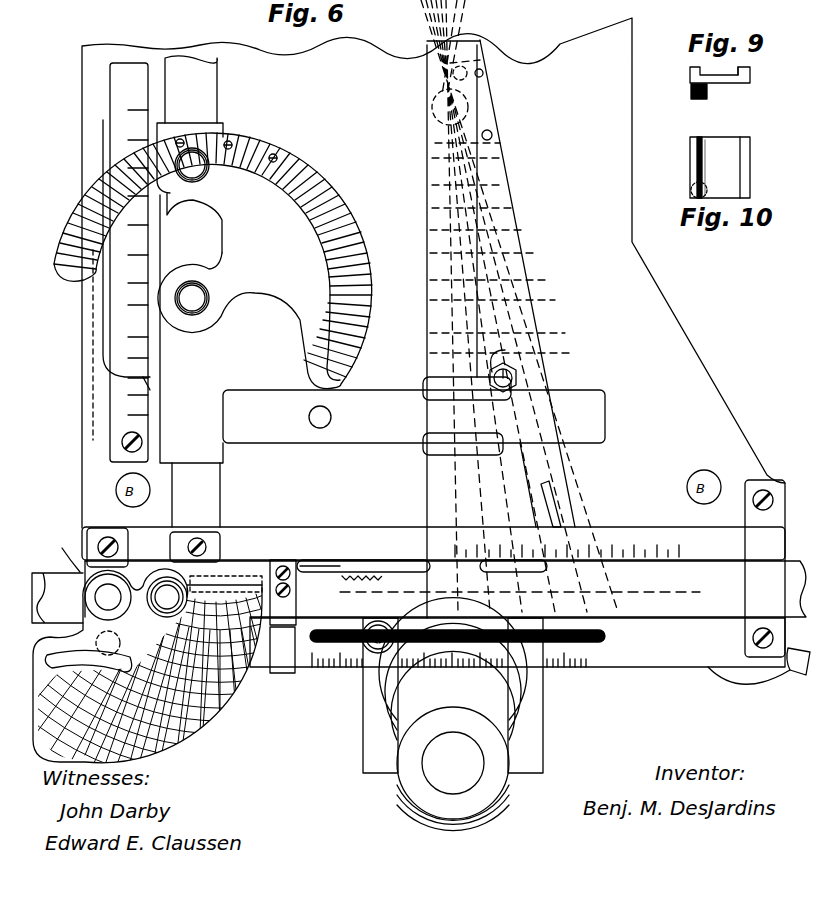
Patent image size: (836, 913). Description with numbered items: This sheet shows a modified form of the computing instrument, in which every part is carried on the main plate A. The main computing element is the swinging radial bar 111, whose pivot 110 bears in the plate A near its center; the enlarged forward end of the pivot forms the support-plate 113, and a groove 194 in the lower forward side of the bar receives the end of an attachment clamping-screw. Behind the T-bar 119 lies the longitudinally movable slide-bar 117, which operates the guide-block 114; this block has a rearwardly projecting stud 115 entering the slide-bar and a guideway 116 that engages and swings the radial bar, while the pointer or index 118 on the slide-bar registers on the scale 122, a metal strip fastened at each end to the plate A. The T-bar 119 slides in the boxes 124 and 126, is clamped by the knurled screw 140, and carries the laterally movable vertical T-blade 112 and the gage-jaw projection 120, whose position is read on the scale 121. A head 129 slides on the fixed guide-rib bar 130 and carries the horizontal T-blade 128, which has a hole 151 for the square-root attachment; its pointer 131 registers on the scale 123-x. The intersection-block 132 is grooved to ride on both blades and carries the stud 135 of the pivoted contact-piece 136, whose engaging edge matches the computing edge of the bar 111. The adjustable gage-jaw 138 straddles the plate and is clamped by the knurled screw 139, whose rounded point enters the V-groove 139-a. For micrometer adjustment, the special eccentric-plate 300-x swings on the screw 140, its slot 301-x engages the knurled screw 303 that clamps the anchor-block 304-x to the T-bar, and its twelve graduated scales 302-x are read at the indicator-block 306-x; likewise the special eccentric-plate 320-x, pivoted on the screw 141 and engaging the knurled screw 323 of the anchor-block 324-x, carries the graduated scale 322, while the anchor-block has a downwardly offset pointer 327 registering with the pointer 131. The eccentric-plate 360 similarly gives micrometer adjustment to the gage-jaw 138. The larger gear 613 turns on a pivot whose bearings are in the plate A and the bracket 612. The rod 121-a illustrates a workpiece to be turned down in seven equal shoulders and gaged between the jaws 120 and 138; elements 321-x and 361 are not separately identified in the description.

In FIG. 6, the main plate A is at (433, 273).
In FIG. 6, the pivot 110 is at (448, 107).
In FIG. 6, the swinging radial bar 111 is at (505, 215).
In FIG. 6, the vertical T-blade 112 is at (436, 236).
In FIG. 6, the support-plate 113 is at (440, 134).
In FIG. 9, the guide-block 114 is at (720, 83).
In FIG. 10, the guide-block 114 is at (720, 167).
In FIG. 9, the rearwardly-projecting stud 115 is at (690, 96).
In FIG. 10, the rearwardly-projecting stud 115 is at (690, 190).
In FIG. 9, the guideway 116 is at (740, 70).
In FIG. 6, the slide-bar 117 is at (57, 556).
In FIG. 6, the pointer or index 118 is at (538, 570).
In FIG. 6, the T-bar 119 is at (419, 591).
In FIG. 6, the gage-jaw projection 120 is at (525, 695).
In FIG. 6, the scale 121 is at (562, 668).
In FIG. 6, the rod 121-a is at (453, 714).
In FIG. 6, the scale 122 is at (433, 543).
In FIG. 6, the scale 123-x is at (130, 70).
In FIG. 6, the box 124 is at (765, 568).
In FIG. 6, the left box 126 is at (92, 555).
In FIG. 6, the horizontal T-blade 128 is at (414, 416).
In FIG. 6, the head 129 is at (191, 328).
In FIG. 6, the fixed guide-rib bar 130 is at (191, 89).
In FIG. 6, the pointer 131 is at (145, 385).
In FIG. 6, the intersection-block 132 is at (422, 446).
In FIG. 6, the stud 135 is at (518, 378).
In FIG. 6, the pivoted contact-piece 136 is at (507, 350).
In FIG. 6, the adjustable gage-jaw 138 is at (380, 695).
In FIG. 6, the knurled screw 139 is at (386, 626).
In FIG. 6, the V-groove 139-a is at (340, 634).
In FIG. 6, the knurled screw 140 is at (108, 597).
In FIG. 6, the screw 141 is at (197, 298).
In FIG. 6, the hole 151 is at (308, 412).
In FIG. 6, the groove 194 is at (556, 492).
In FIG. 6, the special eccentric-plate 300-x is at (182, 684).
In FIG. 6, the slot 301-x is at (88, 661).
In FIG. 6, the graduated scales 302-x is at (297, 707).
In FIG. 6, the knurled screw 303 is at (165, 595).
In FIG. 6, the anchor-block 304-x is at (290, 655).
In FIG. 6, the indicator-block 306-x is at (248, 575).
In FIG. 6, the special eccentric-plate 320-x is at (213, 261).
In FIG. 6, the graduated ring 321-x is at (300, 190).
In FIG. 6, the graduated scale 322 is at (338, 216).
In FIG. 6, the knurled screw 323 is at (226, 142).
In FIG. 6, the anchor-block 324-x is at (200, 125).
In FIG. 6, the projecting pointer 327 is at (100, 373).
In FIG. 6, the eccentric-plate 360 is at (752, 675).
In FIG. 6, the stop piece 361 is at (794, 673).
In FIG. 6, the bracket 612 is at (310, 568).
In FIG. 6, the larger gear 613 is at (382, 574).